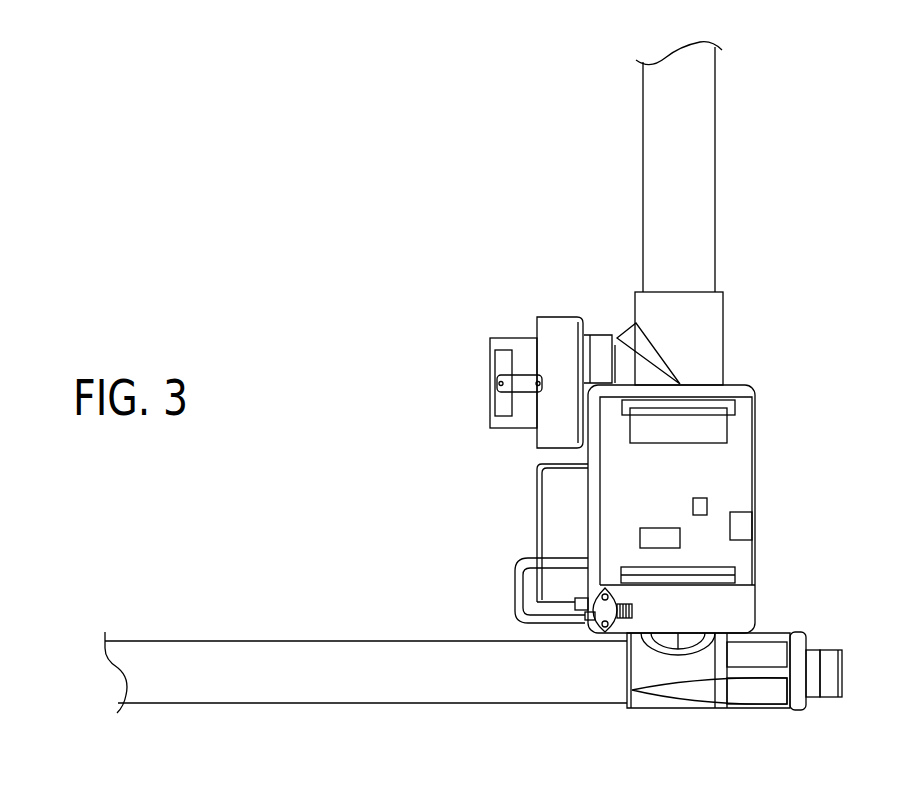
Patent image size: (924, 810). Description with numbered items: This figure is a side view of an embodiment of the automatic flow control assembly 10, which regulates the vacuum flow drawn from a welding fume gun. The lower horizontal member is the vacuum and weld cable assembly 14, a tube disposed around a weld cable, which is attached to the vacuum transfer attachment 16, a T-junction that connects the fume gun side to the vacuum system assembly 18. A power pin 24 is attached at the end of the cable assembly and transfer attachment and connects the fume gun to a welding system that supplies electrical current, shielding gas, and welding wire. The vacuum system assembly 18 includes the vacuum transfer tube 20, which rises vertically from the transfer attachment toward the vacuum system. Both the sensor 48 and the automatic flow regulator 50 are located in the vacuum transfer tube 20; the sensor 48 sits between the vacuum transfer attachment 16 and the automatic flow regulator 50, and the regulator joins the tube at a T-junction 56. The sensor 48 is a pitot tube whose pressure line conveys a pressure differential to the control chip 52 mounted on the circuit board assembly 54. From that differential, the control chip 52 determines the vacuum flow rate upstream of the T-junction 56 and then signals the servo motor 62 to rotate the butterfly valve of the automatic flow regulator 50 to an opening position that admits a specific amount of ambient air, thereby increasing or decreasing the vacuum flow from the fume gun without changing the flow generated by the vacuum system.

The automatic flow control assembly 10 is at (220, 102).
The vacuum and weld cable assembly 14 is at (374, 705).
The vacuum transfer attachment 16 is at (680, 708).
The vacuum system assembly 18 is at (578, 192).
The vacuum transfer tube 20 is at (715, 168).
The power pin 24 is at (805, 640).
The sensor 48 is at (537, 510).
The automatic flow regulator 50 is at (503, 310).
The control chip 52 is at (740, 462).
The circuit board assembly 54 is at (745, 600).
The T-junction 56 is at (634, 338).
The servo motor 62 is at (512, 380).